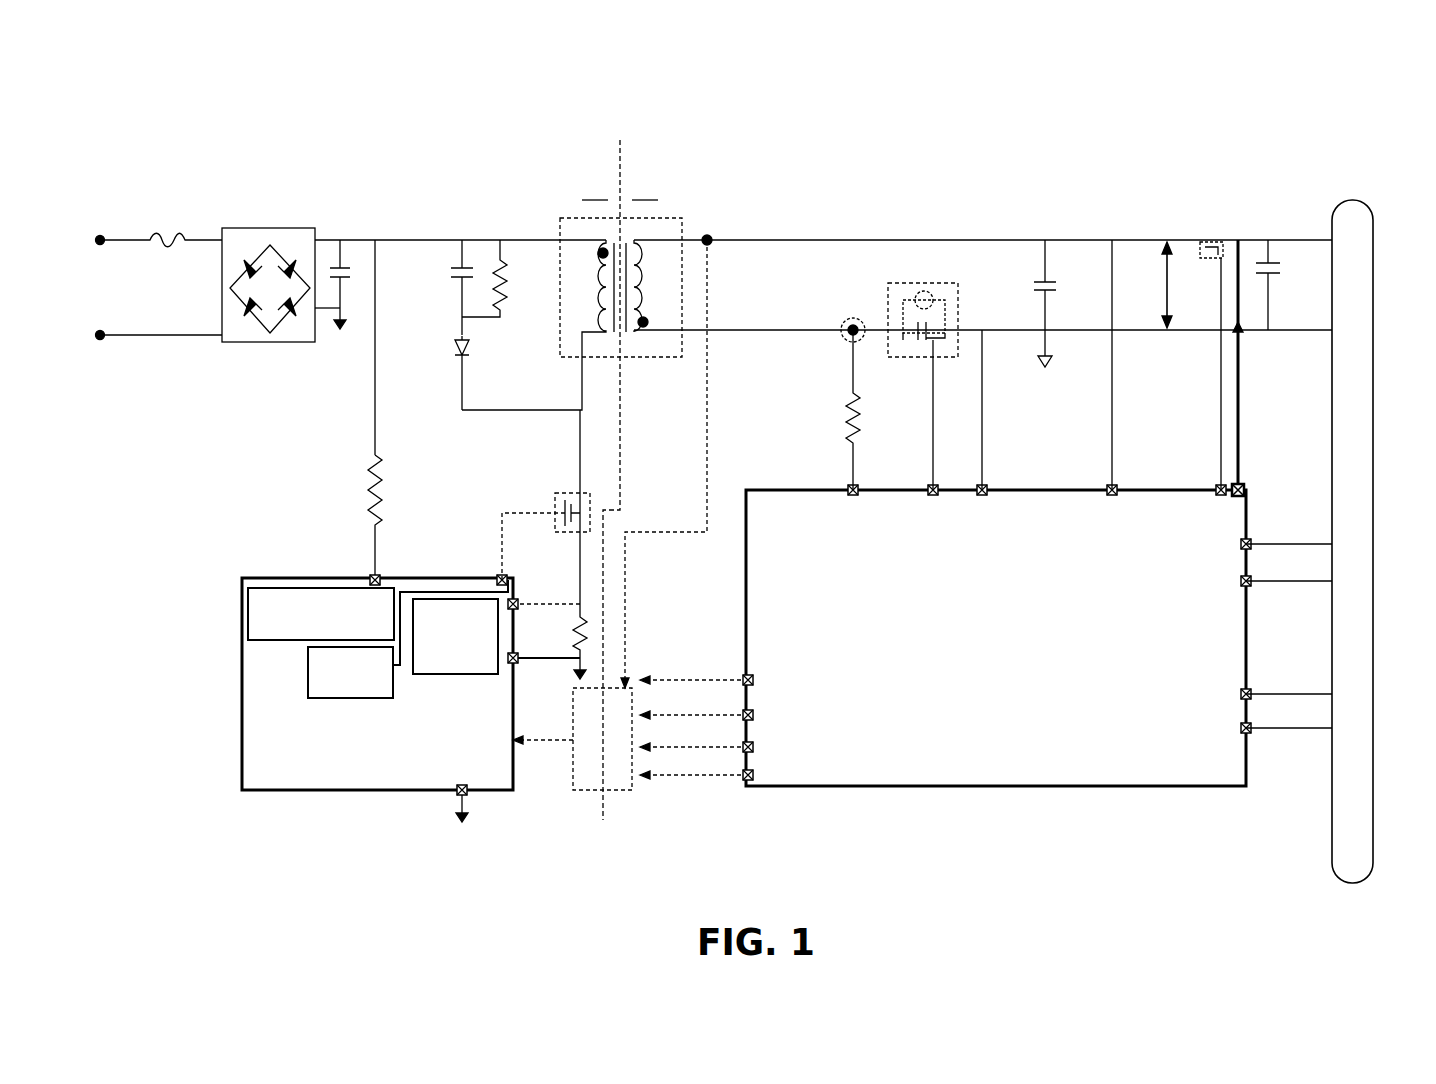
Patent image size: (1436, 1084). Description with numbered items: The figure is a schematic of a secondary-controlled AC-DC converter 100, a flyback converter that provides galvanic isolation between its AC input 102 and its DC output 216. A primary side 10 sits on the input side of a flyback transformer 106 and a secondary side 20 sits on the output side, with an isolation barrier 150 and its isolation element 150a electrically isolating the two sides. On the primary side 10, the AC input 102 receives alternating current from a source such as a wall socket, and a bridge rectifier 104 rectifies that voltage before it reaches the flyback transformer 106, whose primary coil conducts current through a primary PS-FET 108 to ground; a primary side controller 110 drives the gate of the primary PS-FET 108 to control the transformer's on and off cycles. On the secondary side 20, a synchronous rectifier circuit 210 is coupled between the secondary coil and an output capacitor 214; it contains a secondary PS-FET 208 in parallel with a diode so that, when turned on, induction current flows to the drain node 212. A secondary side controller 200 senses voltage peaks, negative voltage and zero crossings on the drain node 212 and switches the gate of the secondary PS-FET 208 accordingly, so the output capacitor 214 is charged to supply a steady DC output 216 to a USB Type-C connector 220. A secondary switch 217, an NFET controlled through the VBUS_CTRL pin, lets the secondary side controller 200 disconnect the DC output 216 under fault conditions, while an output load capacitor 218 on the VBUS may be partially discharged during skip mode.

The AC-DC converter 100 is at (845, 104).
The primary side 10 is at (595, 191).
The secondary side 20 is at (645, 191).
The AC input 102 is at (145, 286).
The bridge rectifier 104 is at (262, 344).
The flyback transformer 106 is at (660, 358).
The primary power switch field-effect transistor 108 is at (555, 501).
The primary side controller 110 is at (414, 531).
The isolation barrier 150 is at (621, 147).
The isolation element 150a is at (630, 519).
The secondary side controller 200 is at (997, 513).
The secondary PS-FET 208 is at (915, 346).
The synchronous rectifier circuit 210 is at (888, 300).
The drain node 212 is at (849, 337).
The output capacitor 214 is at (1022, 287).
The DC output 216 is at (1150, 285).
The secondary switch 217 is at (1209, 239).
The output load capacitor 218 is at (1274, 264).
The USB Type-C connector 220 is at (1375, 293).